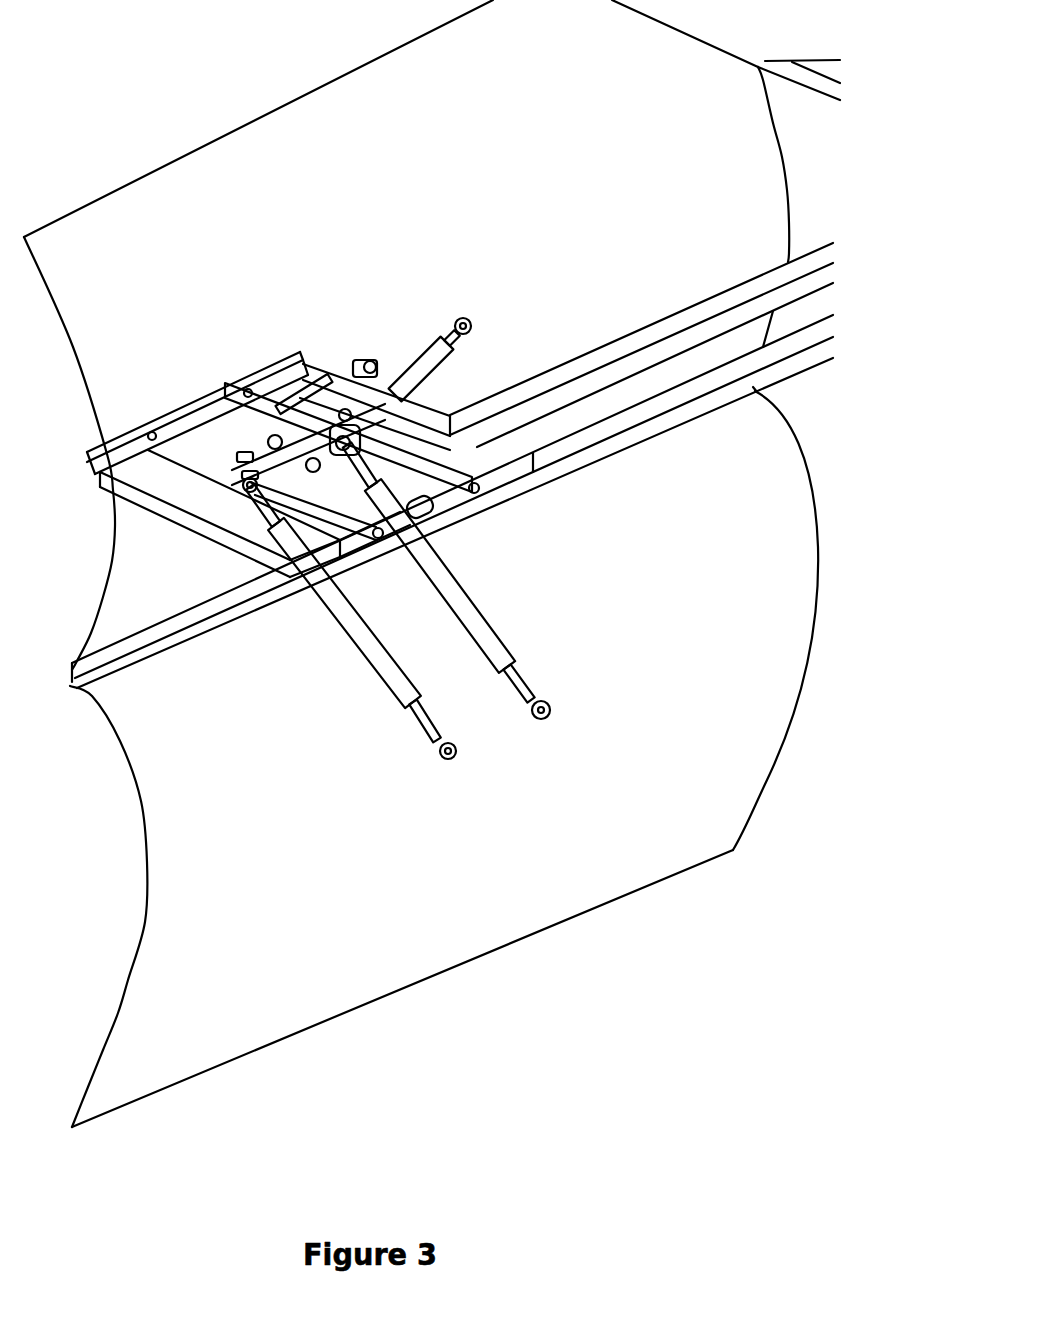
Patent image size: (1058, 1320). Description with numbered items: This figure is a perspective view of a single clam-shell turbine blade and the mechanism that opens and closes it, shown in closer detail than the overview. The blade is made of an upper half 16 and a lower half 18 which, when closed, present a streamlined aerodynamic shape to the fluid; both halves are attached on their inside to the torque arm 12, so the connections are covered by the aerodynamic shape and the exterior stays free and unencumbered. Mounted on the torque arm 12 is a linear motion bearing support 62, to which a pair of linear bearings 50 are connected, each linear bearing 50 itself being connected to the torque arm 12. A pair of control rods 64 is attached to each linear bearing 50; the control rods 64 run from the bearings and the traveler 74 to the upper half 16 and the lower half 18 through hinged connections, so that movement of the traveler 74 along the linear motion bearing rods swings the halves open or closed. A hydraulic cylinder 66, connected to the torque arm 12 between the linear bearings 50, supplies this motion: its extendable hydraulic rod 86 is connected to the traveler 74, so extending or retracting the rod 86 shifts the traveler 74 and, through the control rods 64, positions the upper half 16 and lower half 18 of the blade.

The torque arm 12 is at (593, 350).
The upper half 16 is at (113, 224).
The lower half 18 is at (442, 953).
The linear bearing 50 is at (442, 414).
The linear motion bearing support 62 is at (353, 372).
The control rods 64 is at (423, 355).
The hydraulic cylinder 66 is at (420, 503).
The traveler 74 is at (256, 540).
The extendable hydraulic rod 86 is at (253, 430).